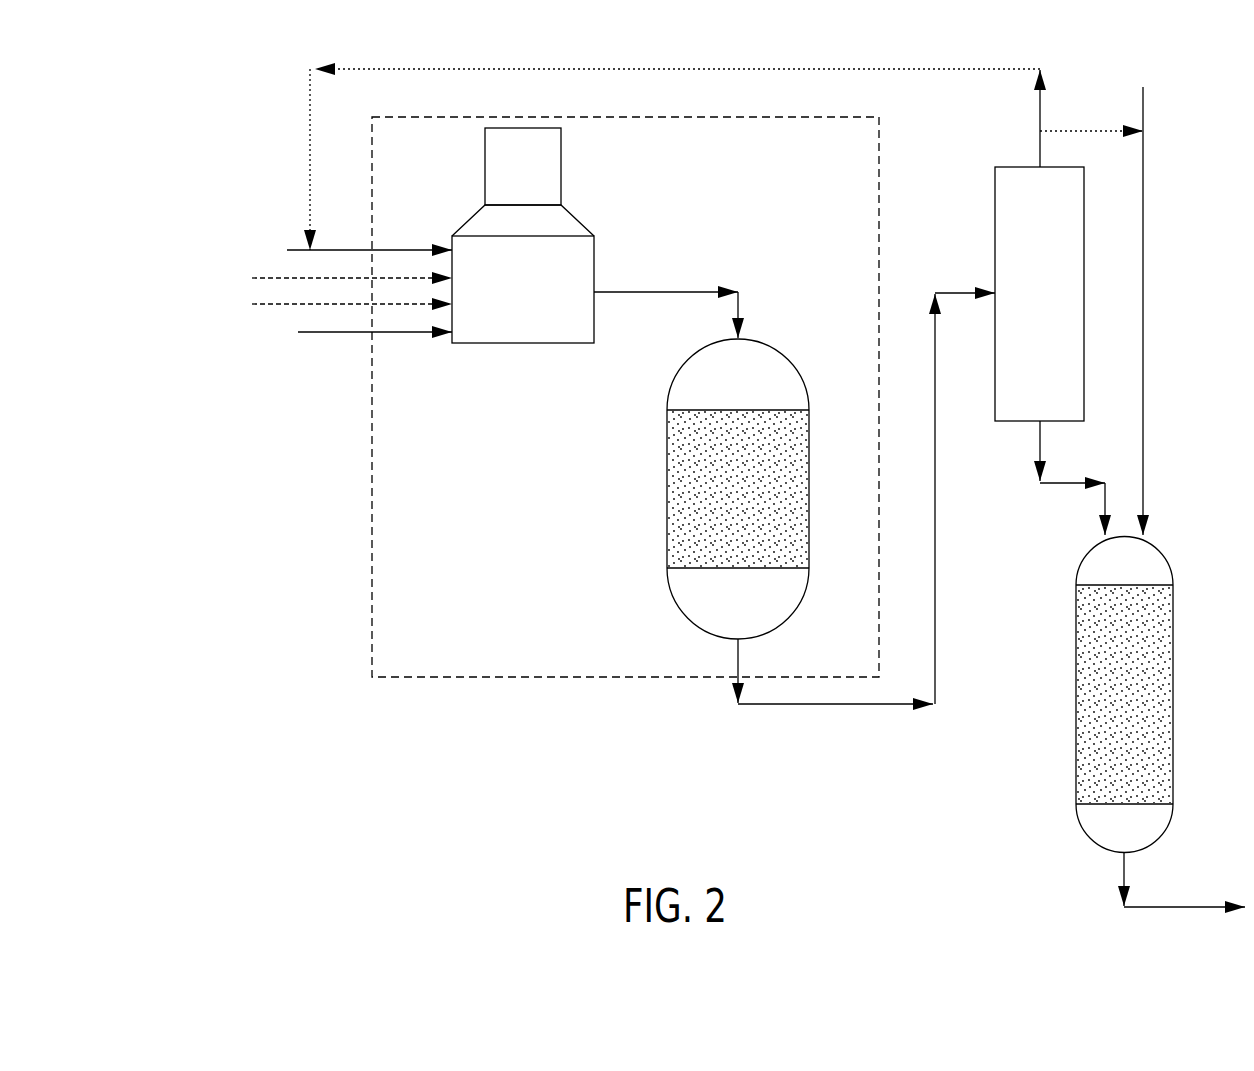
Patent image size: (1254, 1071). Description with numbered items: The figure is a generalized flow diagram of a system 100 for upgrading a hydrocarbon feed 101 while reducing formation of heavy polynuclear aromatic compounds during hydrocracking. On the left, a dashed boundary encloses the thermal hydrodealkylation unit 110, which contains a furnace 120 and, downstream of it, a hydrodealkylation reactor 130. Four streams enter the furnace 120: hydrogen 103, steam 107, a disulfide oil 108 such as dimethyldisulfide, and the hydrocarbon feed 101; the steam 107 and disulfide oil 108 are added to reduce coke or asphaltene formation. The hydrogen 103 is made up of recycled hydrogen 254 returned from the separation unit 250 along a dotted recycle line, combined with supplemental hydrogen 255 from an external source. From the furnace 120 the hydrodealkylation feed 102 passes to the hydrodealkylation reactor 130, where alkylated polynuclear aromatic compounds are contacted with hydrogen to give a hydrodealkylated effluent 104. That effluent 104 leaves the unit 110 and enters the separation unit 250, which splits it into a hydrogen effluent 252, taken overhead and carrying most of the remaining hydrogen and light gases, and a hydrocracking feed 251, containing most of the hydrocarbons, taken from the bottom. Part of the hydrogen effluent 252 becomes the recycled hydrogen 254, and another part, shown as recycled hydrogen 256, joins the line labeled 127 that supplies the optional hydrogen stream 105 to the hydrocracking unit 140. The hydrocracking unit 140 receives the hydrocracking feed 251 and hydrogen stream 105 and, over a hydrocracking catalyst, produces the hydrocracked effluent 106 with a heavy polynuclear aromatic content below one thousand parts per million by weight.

The system 100 is at (155, 145).
The thermal hydrodealkylation unit 110 is at (457, 682).
The recycled hydrogen 254 is at (818, 66).
The supplemental hydrogen 255 is at (298, 248).
The hydrogen 103 is at (347, 248).
The steam 107 is at (275, 277).
The disulfide oil 108 is at (275, 305).
The hydrocarbon feed 101 is at (352, 333).
The furnace 120 is at (517, 344).
The hydrodealkylation feed 102 is at (643, 290).
The hydrodealkylation reactor 130 is at (687, 363).
The hydrodealkylated effluent 104 is at (848, 707).
The separation unit 250 is at (1084, 300).
The hydrogen effluent 252 is at (1038, 107).
The recycled hydrogen 256 is at (1103, 128).
The feed line 127 is at (1145, 108).
The hydrogen stream 105 is at (1145, 332).
The hydrocracking feed 251 is at (1060, 480).
The hydrocracking unit 140 is at (1172, 563).
The hydrocracked effluent 106 is at (1207, 905).